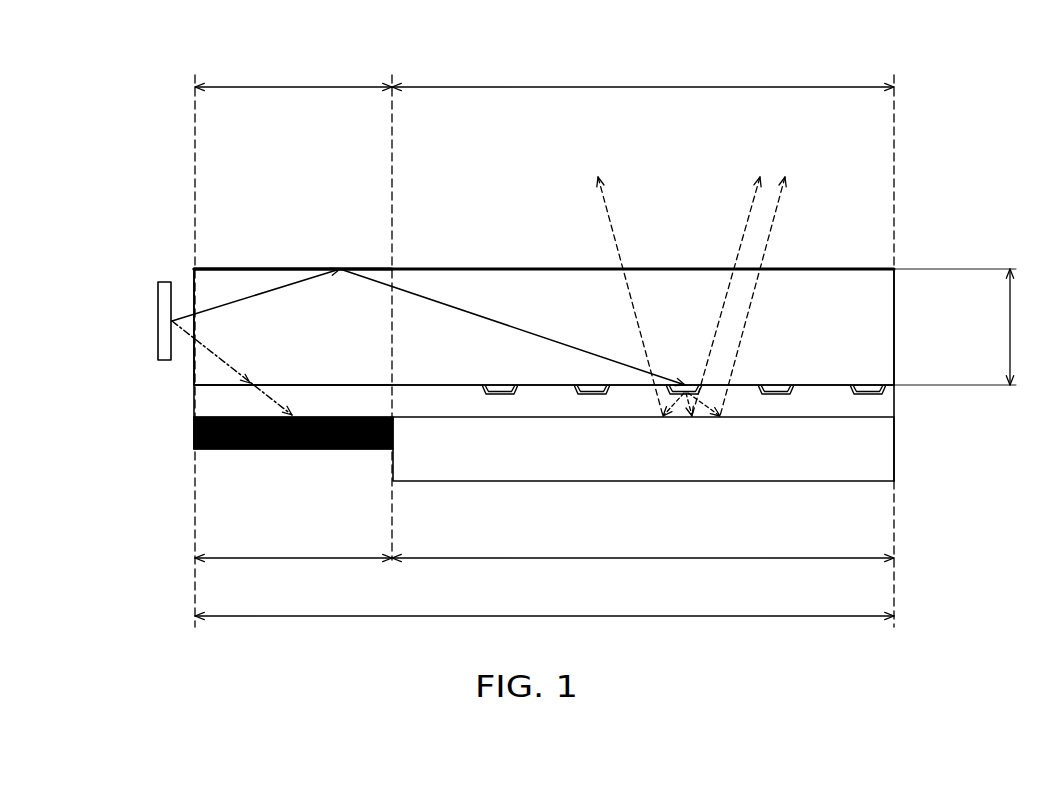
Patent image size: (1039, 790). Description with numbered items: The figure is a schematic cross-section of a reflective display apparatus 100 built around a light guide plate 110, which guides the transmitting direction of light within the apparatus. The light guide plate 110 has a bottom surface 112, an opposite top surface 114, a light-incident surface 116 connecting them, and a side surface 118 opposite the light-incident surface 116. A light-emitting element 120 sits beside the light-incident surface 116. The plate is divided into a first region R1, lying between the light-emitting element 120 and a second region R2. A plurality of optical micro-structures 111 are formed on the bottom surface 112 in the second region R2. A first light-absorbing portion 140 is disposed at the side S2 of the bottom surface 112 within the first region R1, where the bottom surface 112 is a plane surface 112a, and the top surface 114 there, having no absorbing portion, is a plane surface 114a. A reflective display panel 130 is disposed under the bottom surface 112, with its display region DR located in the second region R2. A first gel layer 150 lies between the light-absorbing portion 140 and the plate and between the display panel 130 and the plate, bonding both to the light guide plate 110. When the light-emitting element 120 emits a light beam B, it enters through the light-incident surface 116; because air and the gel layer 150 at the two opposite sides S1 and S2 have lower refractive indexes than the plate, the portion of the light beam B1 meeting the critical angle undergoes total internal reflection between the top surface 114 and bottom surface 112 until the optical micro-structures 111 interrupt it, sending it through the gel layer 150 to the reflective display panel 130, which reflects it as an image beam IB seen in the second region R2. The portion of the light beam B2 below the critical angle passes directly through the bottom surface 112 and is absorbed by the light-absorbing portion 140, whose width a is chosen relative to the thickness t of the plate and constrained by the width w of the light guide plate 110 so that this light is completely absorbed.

The reflective display apparatus 100 is at (998, 673).
The light guide plate 110 is at (872, 302).
The optical micro-structures 111 is at (868, 394).
The bottom surface 112 is at (889, 389).
The plane surface 112a is at (236, 387).
The top surface 114 is at (832, 268).
The plane surface 114a is at (238, 268).
The light-incident surface 116 is at (193, 366).
The side surface 118 is at (896, 347).
The light-emitting element 120 is at (158, 341).
The reflective display panel 130 is at (597, 453).
The first light-absorbing portion 140 is at (275, 433).
The first gel layer 150 is at (322, 403).
The light beam B is at (53, 78).
The portion of the light beam B1 is at (292, 283).
The portion of the light beam B2 is at (215, 360).
The image beam IB is at (772, 227).
The side S1 is at (189, 220).
The side S2 is at (191, 401).
The first region R1 is at (293, 341).
The second region R2 is at (643, 341).
The width of the first light-absorbing portion a is at (293, 572).
The display region DR is at (643, 572).
The width of the light guide plate w is at (544, 630).
The thickness of the light guide plate t is at (960, 327).